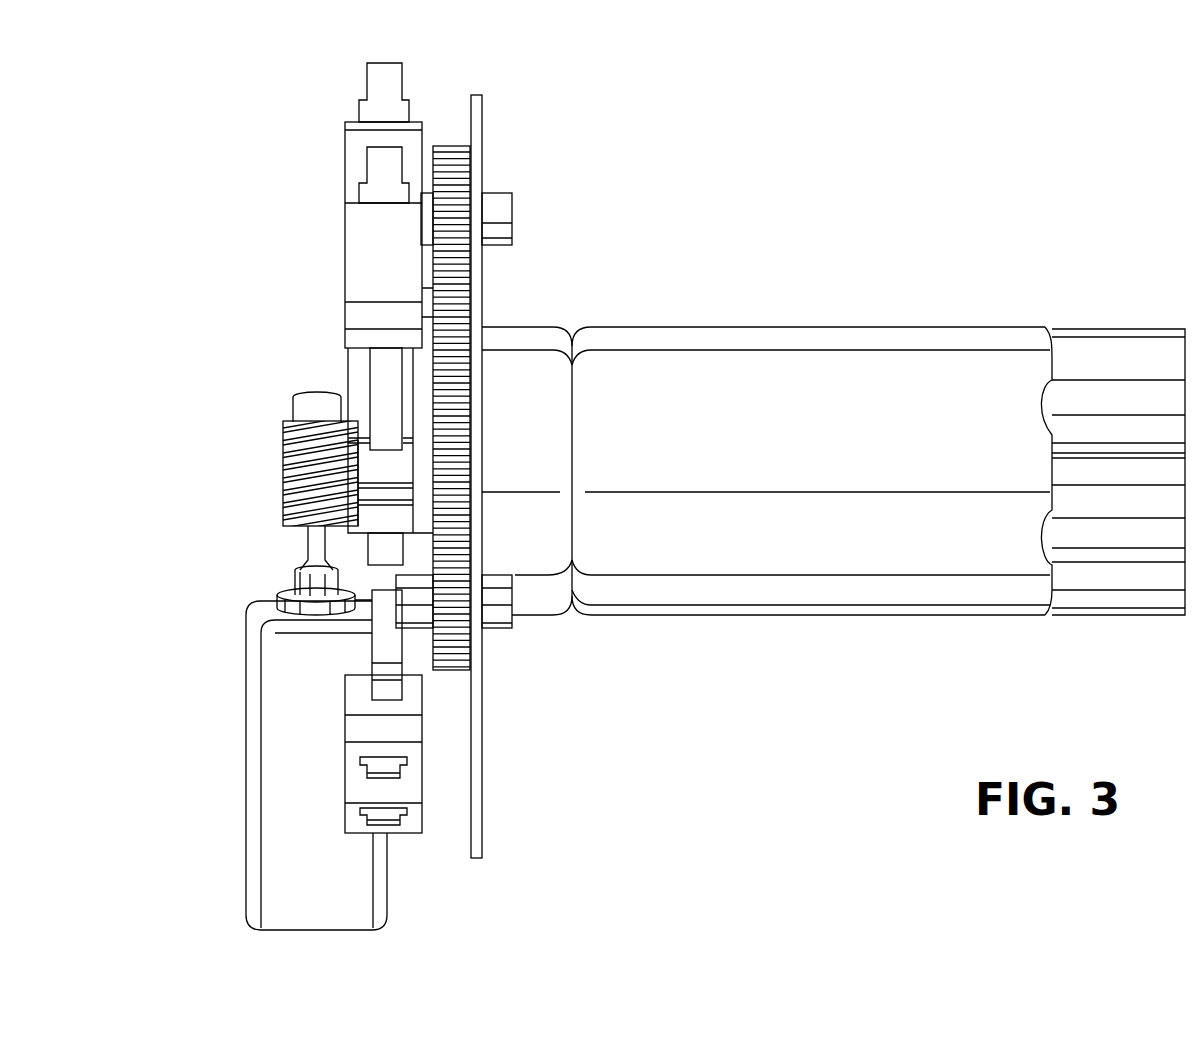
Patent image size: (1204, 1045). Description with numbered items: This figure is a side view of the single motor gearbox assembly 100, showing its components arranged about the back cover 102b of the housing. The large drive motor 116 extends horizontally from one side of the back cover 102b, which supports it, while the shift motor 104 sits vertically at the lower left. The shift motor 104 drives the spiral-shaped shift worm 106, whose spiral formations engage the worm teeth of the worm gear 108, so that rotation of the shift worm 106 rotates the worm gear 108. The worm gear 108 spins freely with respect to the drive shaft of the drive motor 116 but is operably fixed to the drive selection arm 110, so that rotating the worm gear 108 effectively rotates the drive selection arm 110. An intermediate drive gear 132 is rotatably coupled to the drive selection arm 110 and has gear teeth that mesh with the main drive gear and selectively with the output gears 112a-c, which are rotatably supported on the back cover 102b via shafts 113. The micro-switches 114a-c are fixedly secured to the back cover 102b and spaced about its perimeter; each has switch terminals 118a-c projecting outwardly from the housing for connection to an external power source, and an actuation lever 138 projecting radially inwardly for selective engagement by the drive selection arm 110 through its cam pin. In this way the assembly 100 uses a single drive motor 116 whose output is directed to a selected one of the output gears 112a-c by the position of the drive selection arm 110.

The single motor gearbox assembly 100 is at (768, 228).
The back cover 102b is at (487, 822).
The shift motor 104 is at (295, 900).
The shift worm 106 is at (303, 488).
The worm gear 108 is at (377, 477).
The drive selection arm 110 is at (423, 390).
The output gears 112a-c is at (450, 148).
The shafts 113 is at (512, 220).
The micro-switches 114a-c is at (370, 265).
The drive motor 116 is at (960, 368).
The switch terminals 118a-c is at (392, 85).
The intermediate drive gear 132 is at (452, 320).
The actuation lever 138 is at (387, 657).